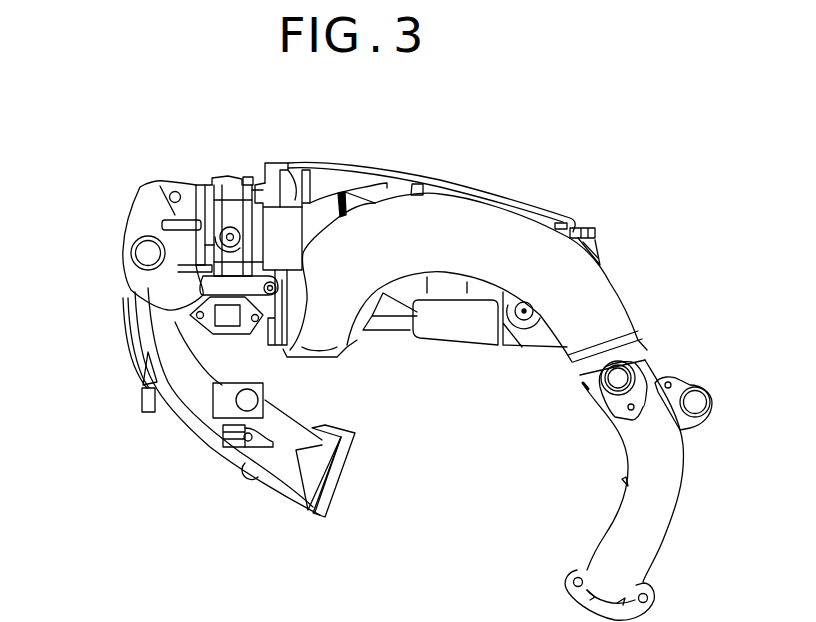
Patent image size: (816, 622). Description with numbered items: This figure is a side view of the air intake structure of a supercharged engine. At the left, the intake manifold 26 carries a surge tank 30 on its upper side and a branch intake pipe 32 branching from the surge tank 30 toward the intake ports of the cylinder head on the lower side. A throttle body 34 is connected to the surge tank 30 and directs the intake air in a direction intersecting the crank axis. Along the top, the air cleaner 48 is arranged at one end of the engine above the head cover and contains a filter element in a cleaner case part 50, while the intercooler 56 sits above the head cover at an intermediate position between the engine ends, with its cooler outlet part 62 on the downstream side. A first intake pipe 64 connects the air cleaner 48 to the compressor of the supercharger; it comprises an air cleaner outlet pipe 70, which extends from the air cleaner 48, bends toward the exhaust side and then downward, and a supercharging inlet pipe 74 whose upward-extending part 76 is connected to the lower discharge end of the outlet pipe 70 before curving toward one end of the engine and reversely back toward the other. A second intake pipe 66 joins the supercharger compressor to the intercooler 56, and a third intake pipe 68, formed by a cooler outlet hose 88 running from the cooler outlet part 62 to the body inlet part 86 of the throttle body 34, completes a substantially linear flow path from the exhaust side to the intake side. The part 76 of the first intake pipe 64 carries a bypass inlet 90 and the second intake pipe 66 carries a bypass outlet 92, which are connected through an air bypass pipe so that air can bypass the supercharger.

The intake manifold 26 is at (124, 376).
The surge tank 30 is at (140, 223).
The branch intake pipe 32 is at (193, 410).
The throttle body 34 is at (207, 183).
The air cleaner 48 is at (507, 188).
The cleaner case part 50 is at (453, 178).
The intercooler 56 is at (406, 183).
The cooler outlet part 62 is at (356, 170).
The first intake pipe 64 is at (357, 346).
The second intake pipe 66 is at (593, 489).
The third intake pipe 68 is at (292, 170).
The air cleaner outlet pipe 70 is at (330, 174).
The supercharging inlet pipe 74 is at (673, 467).
The part extended upward 76 is at (613, 430).
The body inlet part 86 is at (238, 178).
The cooler outlet hose 88 is at (313, 250).
The bypass inlet 90 is at (583, 385).
The bypass outlet 92 is at (708, 390).